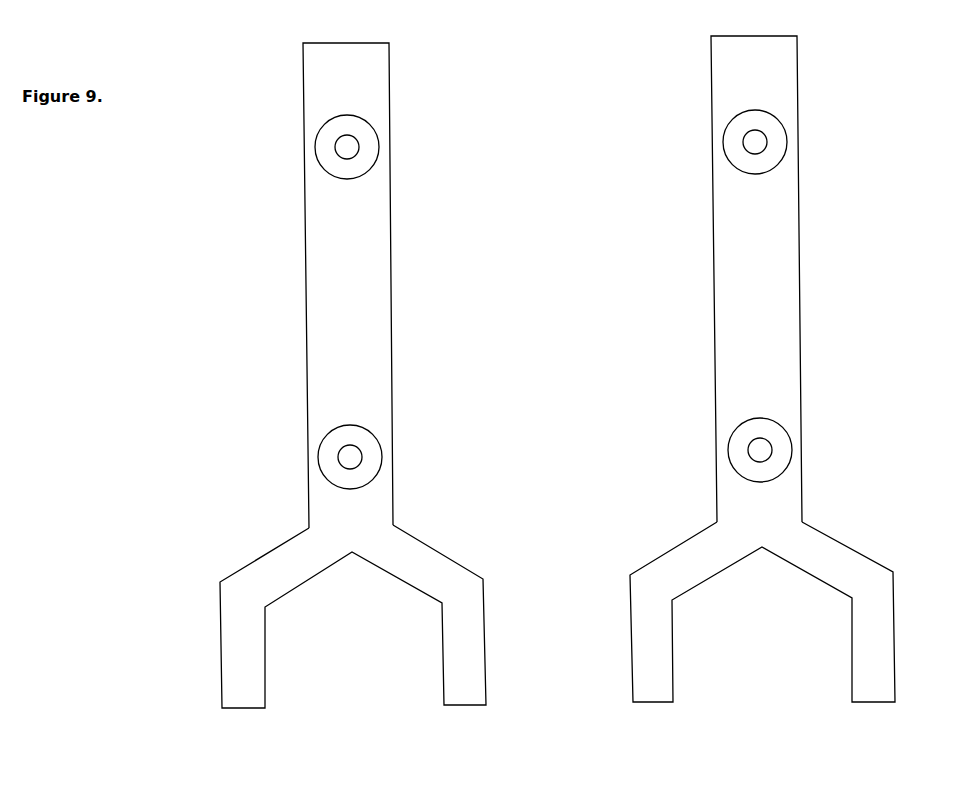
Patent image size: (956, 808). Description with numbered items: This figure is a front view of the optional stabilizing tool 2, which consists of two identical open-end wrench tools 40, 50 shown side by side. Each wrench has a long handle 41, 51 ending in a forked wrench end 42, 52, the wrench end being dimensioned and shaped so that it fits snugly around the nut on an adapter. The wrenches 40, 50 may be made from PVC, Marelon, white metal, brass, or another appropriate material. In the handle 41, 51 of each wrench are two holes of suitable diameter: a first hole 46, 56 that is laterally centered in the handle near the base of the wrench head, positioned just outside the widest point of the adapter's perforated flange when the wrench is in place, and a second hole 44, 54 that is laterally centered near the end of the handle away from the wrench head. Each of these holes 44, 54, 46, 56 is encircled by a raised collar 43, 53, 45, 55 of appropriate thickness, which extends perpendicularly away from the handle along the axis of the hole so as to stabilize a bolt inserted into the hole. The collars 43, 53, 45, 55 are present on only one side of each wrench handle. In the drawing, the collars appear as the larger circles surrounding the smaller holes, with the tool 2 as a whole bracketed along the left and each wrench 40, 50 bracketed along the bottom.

The tool 2 is at (142, 46).
The open-end wrench tool 40 is at (493, 712).
The handle 41 is at (305, 246).
The wrench end 42 is at (346, 638).
The raised collar 43 is at (316, 447).
The second hole 44 is at (352, 146).
The raised collar 45 is at (312, 140).
The first hole 46 is at (354, 455).
The open-end wrench tool 50 is at (903, 706).
The handle 51 is at (713, 243).
The wrench end 52 is at (757, 633).
The raised collar 53 is at (727, 440).
The second hole 54 is at (762, 139).
The raised collar 55 is at (722, 138).
The first hole 56 is at (766, 446).